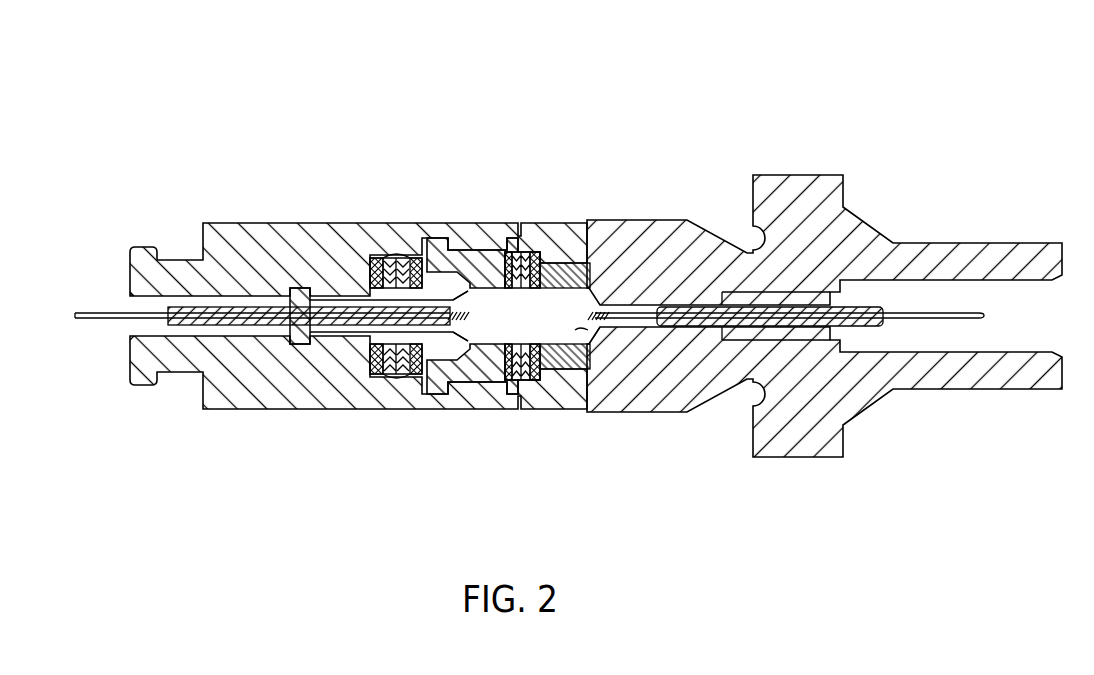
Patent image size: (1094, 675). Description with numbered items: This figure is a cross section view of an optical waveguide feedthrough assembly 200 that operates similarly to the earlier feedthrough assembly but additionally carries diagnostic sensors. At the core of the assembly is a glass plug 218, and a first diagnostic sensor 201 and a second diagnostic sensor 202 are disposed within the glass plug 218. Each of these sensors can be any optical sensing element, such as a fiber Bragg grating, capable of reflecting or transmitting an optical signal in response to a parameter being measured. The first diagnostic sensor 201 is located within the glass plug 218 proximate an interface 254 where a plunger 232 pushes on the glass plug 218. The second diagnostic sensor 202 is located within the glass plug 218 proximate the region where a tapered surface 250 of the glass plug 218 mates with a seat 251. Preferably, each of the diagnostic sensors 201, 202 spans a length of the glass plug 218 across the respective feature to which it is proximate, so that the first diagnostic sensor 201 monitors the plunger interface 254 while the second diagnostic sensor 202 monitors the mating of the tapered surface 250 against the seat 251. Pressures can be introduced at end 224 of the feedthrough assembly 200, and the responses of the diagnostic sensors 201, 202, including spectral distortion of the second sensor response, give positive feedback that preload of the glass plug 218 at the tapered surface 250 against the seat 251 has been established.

The optical waveguide feedthrough assembly 200 is at (978, 125).
The first diagnostic sensor 201 is at (489, 385).
The second diagnostic sensor 202 is at (606, 318).
The glass plug 218 is at (540, 320).
The end 224 is at (132, 327).
The plunger 232 is at (360, 336).
The tapered surface 250 is at (633, 263).
The seat 251 is at (578, 330).
The interface 254 is at (460, 300).